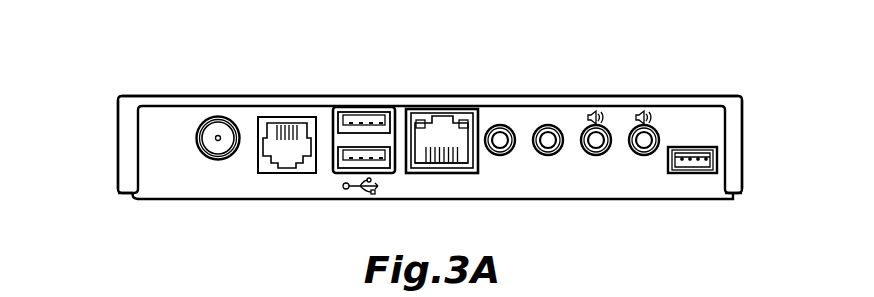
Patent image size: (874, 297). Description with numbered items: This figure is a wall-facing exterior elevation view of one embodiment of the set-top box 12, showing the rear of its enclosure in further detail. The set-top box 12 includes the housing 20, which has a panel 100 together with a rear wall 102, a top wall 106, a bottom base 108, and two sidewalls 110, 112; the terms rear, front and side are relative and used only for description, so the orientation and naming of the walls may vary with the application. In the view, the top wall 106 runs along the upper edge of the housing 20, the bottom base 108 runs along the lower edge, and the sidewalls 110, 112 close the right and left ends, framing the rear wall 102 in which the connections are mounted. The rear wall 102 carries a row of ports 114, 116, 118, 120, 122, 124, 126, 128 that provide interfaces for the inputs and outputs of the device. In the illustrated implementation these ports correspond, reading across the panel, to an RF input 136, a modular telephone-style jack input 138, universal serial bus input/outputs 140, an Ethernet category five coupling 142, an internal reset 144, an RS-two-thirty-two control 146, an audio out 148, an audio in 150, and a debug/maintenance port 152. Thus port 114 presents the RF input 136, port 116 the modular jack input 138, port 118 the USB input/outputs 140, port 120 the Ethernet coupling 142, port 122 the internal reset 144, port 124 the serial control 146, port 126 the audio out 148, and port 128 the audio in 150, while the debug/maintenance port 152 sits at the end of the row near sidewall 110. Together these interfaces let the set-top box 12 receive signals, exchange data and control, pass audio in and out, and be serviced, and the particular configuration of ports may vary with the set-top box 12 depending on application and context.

The set-top box 12 is at (123, 82).
The housing 20 is at (136, 198).
The panel 100 is at (725, 90).
The rear wall 102 is at (176, 190).
The top wall 106 is at (189, 95).
The bottom base 108 is at (306, 200).
The sidewall 110 is at (742, 138).
The sidewall 112 is at (118, 139).
The port 114 is at (219, 118).
The port 116 is at (288, 124).
The port 118 is at (367, 115).
The port 120 is at (444, 115).
The port 122 is at (501, 126).
The port 124 is at (549, 126).
The port 126 is at (597, 126).
The port 128 is at (645, 126).
The RF input 136 is at (218, 160).
The RJ-45 input 138 is at (266, 174).
The universal serial bus (USB) input/outputs 140 is at (356, 170).
The Ethernet category 5 (Cat 5) coupling 142 is at (444, 170).
The internal reset 144 is at (503, 152).
The RS232 control 146 is at (550, 152).
The audio out 148 is at (598, 152).
The audio in 150 is at (645, 152).
The debug/maintenance port 152 is at (694, 172).